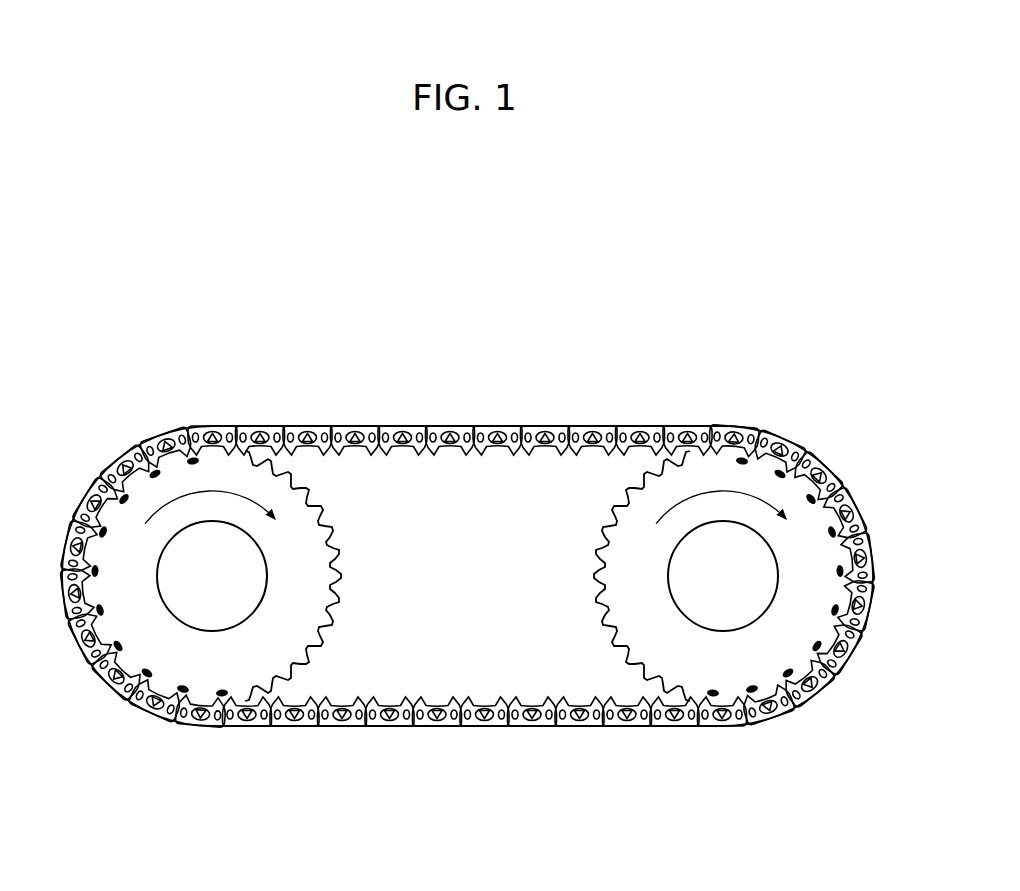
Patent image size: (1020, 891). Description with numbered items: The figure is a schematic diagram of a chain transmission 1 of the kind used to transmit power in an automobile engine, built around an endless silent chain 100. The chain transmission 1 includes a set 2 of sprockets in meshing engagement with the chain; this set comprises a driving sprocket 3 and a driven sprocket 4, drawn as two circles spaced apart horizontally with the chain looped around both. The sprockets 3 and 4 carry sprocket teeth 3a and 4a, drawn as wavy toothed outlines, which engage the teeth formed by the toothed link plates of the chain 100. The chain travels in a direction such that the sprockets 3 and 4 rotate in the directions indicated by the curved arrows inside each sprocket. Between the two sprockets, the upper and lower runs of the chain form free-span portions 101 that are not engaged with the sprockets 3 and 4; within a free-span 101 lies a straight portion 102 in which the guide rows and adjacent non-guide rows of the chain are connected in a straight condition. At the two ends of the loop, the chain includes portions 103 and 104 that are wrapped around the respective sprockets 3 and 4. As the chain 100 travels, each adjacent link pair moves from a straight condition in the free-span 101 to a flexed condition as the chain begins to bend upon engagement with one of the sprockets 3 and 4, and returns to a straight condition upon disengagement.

The chain transmission 1 is at (706, 206).
The silent chain 100 is at (503, 393).
The free-span portions 101 is at (597, 420).
The straight portion 102 is at (358, 434).
The wrapped portion 103 is at (80, 486).
The wrapped portion 104 is at (793, 436).
The set of sprockets 2 is at (513, 612).
The driving sprocket 3 is at (298, 624).
The sprocket teeth 3a is at (293, 473).
The driven sprocket 4 is at (640, 614).
The sprocket teeth 4a is at (677, 463).